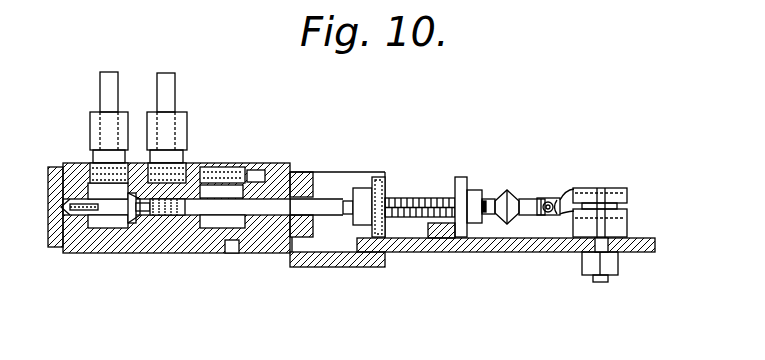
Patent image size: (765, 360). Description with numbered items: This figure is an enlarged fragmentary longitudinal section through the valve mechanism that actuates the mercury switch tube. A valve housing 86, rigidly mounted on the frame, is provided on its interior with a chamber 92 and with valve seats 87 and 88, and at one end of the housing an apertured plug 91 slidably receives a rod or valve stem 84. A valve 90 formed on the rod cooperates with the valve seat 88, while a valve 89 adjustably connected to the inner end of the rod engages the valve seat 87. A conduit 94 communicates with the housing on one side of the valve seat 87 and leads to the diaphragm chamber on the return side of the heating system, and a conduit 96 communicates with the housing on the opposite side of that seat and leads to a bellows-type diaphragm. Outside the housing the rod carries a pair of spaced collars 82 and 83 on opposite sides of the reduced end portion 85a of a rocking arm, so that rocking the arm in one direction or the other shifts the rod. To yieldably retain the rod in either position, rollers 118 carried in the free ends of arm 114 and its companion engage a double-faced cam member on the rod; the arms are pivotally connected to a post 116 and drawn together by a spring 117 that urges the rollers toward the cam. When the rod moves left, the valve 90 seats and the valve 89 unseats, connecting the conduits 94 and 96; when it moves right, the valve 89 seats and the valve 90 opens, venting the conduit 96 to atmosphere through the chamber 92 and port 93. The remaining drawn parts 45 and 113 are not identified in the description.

The end cap 45 is at (84, 163).
The valve housing 86 is at (258, 165).
The valve seat 87 is at (140, 217).
The valve seat 88 is at (204, 238).
The valve 89 is at (122, 211).
The valve 90 is at (202, 165).
The chamber 92 is at (232, 252).
The port 93 is at (240, 165).
The conduit 94 is at (101, 89).
The conduit 96 is at (167, 81).
The apertured plug 91 is at (298, 181).
The collar 82 is at (376, 178).
The rod or valve stem 84 is at (407, 198).
The collar 83 is at (461, 180).
The reduced end portion 85a is at (443, 233).
The rollers 118 is at (493, 197).
The cone 113 is at (509, 196).
The spring 117 is at (548, 197).
The arm 114 is at (561, 197).
The post 116 is at (618, 190).